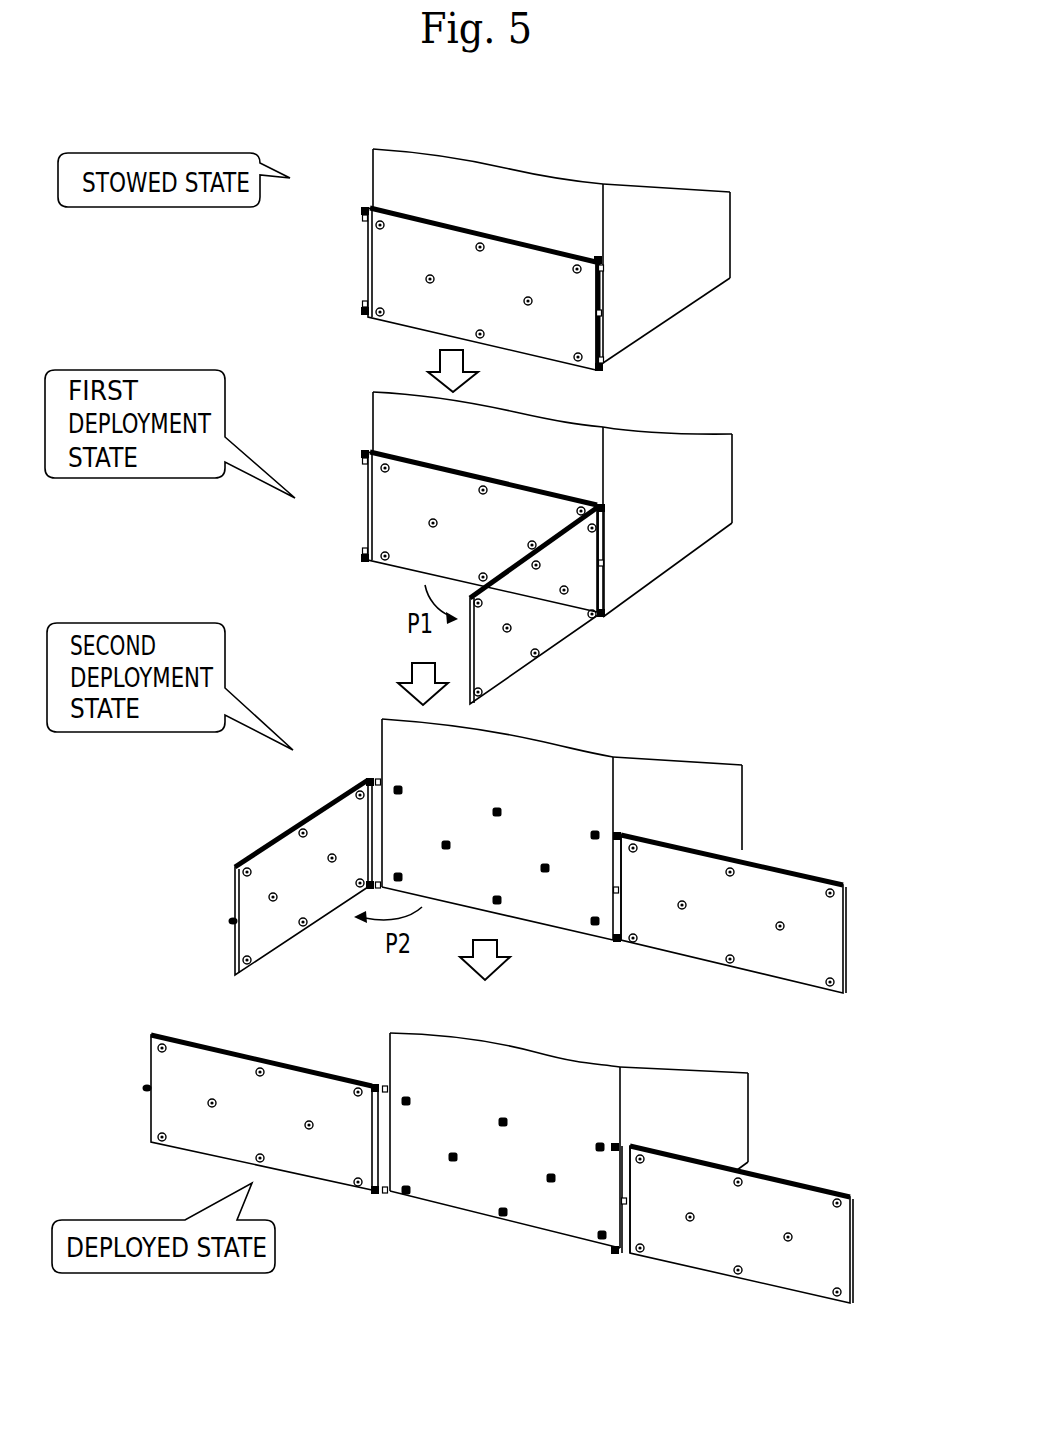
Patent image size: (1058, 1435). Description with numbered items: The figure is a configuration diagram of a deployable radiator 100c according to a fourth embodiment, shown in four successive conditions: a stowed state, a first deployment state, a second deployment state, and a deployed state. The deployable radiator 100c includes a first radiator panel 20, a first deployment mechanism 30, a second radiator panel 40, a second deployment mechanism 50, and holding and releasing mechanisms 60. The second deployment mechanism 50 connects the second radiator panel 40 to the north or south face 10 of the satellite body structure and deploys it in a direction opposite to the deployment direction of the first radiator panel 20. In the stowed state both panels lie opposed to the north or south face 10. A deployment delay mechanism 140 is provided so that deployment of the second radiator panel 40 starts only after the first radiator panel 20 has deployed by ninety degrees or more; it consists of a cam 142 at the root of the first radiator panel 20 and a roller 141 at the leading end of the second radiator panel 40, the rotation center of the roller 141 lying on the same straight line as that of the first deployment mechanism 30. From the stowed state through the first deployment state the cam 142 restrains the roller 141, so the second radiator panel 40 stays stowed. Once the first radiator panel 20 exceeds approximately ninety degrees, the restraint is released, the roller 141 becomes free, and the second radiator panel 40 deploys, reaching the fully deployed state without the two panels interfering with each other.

The deployable radiator 100c is at (652, 88).
The north or south face of the body structure of the satellite 10 is at (528, 190).
The first radiator panel 20 is at (410, 326).
The first deployment mechanism 30 is at (603, 257).
The second radiator panel 40 is at (420, 555).
The second deployment mechanism 50 is at (362, 212).
The holding and releasing mechanisms 60 is at (601, 1143).
The deployment delay mechanism 140 is at (603, 313).
The roller 141 is at (232, 921).
The cam 142 is at (614, 887).